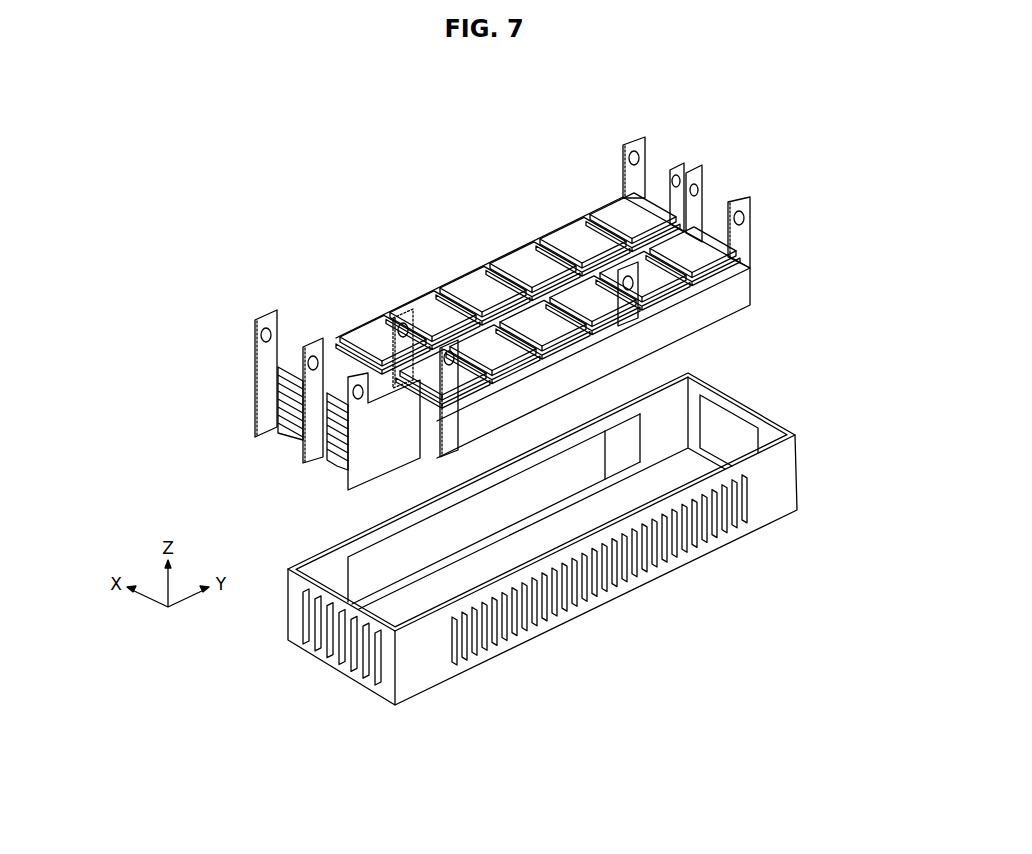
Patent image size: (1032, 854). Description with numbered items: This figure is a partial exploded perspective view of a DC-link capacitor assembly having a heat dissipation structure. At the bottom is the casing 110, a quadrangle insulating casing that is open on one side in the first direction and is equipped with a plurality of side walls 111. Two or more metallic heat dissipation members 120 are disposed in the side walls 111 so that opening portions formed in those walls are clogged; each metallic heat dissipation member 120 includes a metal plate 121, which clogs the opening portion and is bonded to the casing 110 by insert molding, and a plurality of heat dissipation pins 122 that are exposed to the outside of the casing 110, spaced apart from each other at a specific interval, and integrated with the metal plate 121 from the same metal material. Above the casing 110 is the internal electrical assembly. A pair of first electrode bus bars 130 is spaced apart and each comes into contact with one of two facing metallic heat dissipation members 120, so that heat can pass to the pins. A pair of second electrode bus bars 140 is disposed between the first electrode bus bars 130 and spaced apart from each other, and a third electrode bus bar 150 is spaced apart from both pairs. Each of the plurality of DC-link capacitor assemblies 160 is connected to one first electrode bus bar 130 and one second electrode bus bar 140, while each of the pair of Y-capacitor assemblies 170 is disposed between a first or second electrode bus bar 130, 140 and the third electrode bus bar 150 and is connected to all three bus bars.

The casing 110 is at (519, 556).
The side wall 111 is at (779, 432).
The metallic heat dissipation member 120 is at (494, 605).
The metal plate 121 is at (600, 447).
The heat dissipation pin 122 is at (326, 658).
The first electrode bus bar 130 is at (636, 146).
The second electrode bus bar 140 is at (680, 172).
The third electrode bus bar 150 is at (313, 442).
The DC-link capacitor assembly 160 is at (620, 217).
The Y-capacitor assembly 170 is at (293, 389).